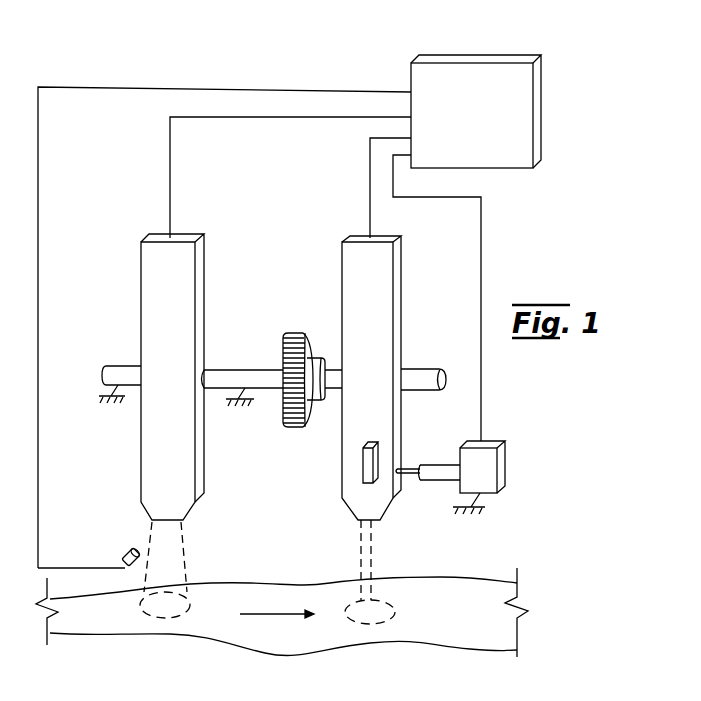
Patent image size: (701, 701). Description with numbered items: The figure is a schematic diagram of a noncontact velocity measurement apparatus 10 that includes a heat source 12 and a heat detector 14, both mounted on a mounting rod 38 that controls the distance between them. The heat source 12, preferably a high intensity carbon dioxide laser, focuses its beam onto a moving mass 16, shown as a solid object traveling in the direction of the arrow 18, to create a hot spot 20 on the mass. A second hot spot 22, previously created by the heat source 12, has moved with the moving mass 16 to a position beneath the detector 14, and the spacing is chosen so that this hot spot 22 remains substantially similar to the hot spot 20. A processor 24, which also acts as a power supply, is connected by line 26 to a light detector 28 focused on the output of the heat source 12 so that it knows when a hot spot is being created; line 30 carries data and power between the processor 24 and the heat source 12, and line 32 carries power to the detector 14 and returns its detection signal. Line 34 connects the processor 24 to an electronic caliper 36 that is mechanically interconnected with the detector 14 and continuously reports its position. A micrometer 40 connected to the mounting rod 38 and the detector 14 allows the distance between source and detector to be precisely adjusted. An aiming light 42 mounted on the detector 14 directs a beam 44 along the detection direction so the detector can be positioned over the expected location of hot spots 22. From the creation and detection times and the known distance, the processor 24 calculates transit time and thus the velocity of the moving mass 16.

The noncontact velocity measurement apparatus 10 is at (292, 64).
The heat source 12 is at (185, 267).
The heat detector 14 is at (383, 271).
The moving mass 16 is at (220, 636).
The arrow 18 is at (288, 620).
The hot spot 20 is at (166, 600).
The second hot spot 22 is at (378, 607).
The processor 24 is at (472, 78).
The line 26 is at (133, 87).
The light detector 28 is at (125, 550).
The line 30 is at (276, 118).
The line 32 is at (368, 171).
The line 34 is at (483, 232).
The caliper 36 is at (498, 475).
The mounting rod 38 is at (228, 374).
The micrometer 40 is at (294, 333).
The aiming light 42 is at (362, 463).
The beam 44 is at (360, 541).